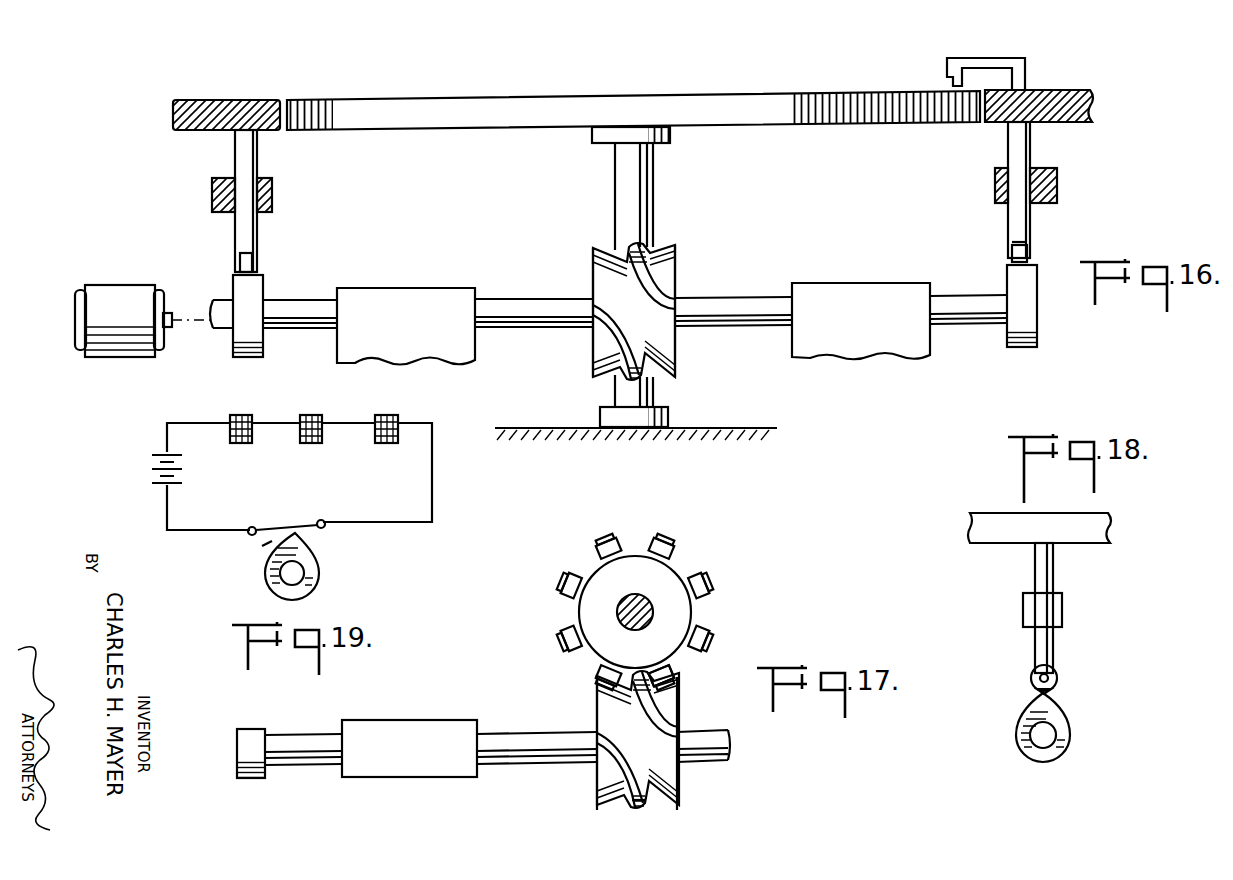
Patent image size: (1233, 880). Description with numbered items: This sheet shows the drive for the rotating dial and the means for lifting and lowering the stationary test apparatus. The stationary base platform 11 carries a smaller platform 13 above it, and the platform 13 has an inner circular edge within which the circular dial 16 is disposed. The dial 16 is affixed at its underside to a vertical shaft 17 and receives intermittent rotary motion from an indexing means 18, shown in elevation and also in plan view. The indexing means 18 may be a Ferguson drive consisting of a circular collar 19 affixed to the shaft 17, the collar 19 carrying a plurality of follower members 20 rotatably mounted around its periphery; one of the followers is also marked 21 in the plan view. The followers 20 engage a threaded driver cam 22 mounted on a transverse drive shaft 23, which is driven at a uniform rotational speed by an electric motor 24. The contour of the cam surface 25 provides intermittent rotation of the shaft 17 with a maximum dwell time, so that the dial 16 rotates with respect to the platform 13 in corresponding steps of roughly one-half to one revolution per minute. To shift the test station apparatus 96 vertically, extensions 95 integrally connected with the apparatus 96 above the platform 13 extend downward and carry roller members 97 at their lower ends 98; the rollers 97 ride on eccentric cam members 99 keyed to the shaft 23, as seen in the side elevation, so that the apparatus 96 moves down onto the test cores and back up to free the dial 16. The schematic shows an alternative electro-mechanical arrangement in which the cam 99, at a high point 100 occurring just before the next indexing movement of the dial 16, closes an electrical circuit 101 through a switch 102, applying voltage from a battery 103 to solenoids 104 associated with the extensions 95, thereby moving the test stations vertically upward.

In FIG. 16, the stationary base platform 11 is at (212, 191).
In FIG. 16, the platform 13 is at (203, 100).
In FIG. 18, the platform 13 is at (980, 522).
In FIG. 16, the dial 16 is at (668, 104).
In FIG. 16, the vertical shaft 17 is at (626, 165).
In FIG. 17, the vertical shaft 17 is at (635, 595).
In FIG. 16, the indexing means 18 is at (690, 358).
In FIG. 17, the indexing means 18 is at (719, 615).
In FIG. 17, the circular collar 19 is at (666, 588).
In FIG. 17, the follower members 20 is at (706, 580).
In FIG. 17, the magnet block 21 is at (592, 570).
In FIG. 16, the threaded driver cam 22 is at (598, 353).
In FIG. 17, the threaded driver cam 22 is at (668, 700).
In FIG. 16, the transverse drive shaft 23 is at (757, 305).
In FIG. 17, the transverse drive shaft 23 is at (706, 762).
In FIG. 16, the electric motor 24 is at (100, 300).
In FIG. 17, the cam surface 25 is at (632, 815).
In FIG. 16, the extensions 95 is at (233, 150).
In FIG. 18, the extensions 95 is at (1042, 574).
In FIG. 16, the test station apparatus 96 is at (1028, 74).
In FIG. 16, the roller members 97 is at (1011, 253).
In FIG. 18, the roller members 97 is at (1055, 689).
In FIG. 16, the lower ends 98 is at (1015, 245).
In FIG. 18, the lower ends 98 is at (1040, 668).
In FIG. 16, the eccentric cam members 99 is at (240, 283).
In FIG. 18, the eccentric cam members 99 is at (1056, 715).
In FIG. 19, the eccentric cam members 99 is at (306, 560).
In FIG. 19, the high point 100 is at (268, 548).
In FIG. 19, the electrical circuit 101 is at (190, 538).
In FIG. 19, the switch 102 is at (300, 521).
In FIG. 19, the battery 103 is at (150, 482).
In FIG. 19, the solenoids 104 is at (376, 412).